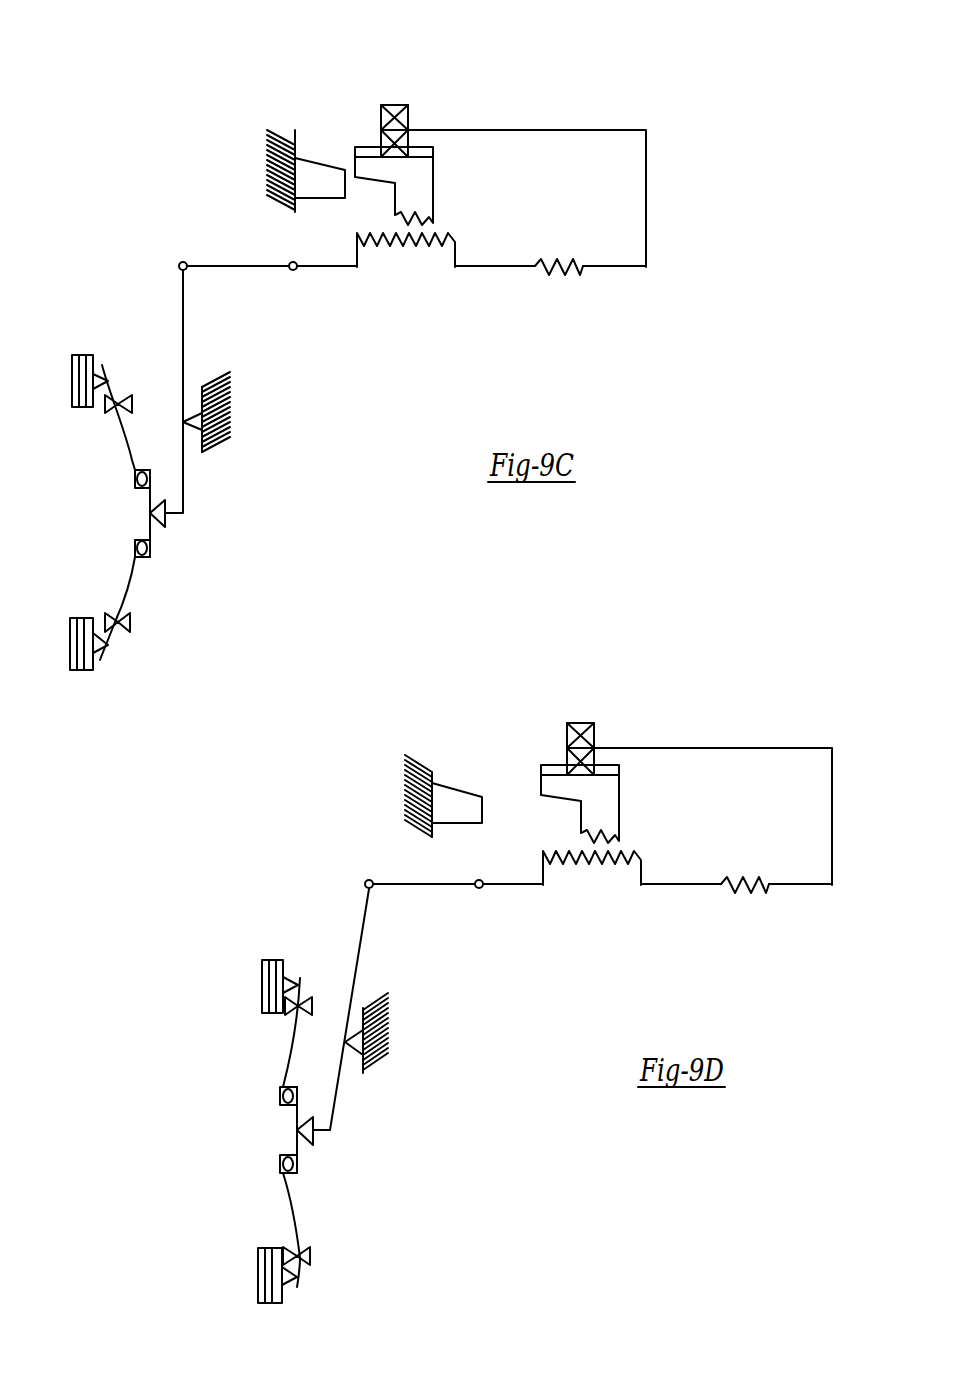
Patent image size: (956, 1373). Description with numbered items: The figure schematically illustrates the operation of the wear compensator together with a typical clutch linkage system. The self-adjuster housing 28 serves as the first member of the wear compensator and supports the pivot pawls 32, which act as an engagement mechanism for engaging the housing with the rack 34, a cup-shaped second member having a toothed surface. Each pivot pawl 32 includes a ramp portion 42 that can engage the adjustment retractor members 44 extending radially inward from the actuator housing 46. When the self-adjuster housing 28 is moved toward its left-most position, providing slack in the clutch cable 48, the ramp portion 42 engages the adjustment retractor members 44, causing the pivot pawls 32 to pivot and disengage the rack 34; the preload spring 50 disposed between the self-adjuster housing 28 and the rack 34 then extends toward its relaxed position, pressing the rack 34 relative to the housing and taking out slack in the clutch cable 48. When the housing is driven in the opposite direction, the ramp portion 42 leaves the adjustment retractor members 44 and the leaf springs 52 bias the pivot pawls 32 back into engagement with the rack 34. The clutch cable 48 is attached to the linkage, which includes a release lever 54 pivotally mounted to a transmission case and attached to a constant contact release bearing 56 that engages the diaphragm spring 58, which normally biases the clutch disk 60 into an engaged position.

In FIG. 9C, the self-adjuster housing 28 is at (598, 130).
In FIG. 9D, the self-adjuster housing 28 is at (713, 763).
In FIG. 9C, the pivot pawls 32 is at (409, 112).
In FIG. 9D, the pivot pawls 32 is at (643, 733).
In FIG. 9C, the rack 34 is at (421, 255).
In FIG. 9D, the rack 34 is at (611, 906).
In FIG. 9C, the ramp portion 42 is at (373, 185).
In FIG. 9D, the ramp portion 42 is at (580, 804).
In FIG. 9C, the adjustment retractor members 44 is at (315, 178).
In FIG. 9D, the adjustment retractor members 44 is at (455, 805).
In FIG. 9D, the actuator housing 46 is at (405, 794).
In FIG. 9C, the clutch cable 48 is at (240, 265).
In FIG. 9D, the clutch cable 48 is at (598, 918).
In FIG. 9C, the preload spring 50 is at (560, 273).
In FIG. 9D, the preload spring 50 is at (772, 934).
In FIG. 9C, the leaf springs 52 is at (395, 105).
In FIG. 9D, the leaf springs 52 is at (601, 699).
In FIG. 9C, the release lever 54 is at (183, 338).
In FIG. 9D, the release lever 54 is at (337, 1088).
In FIG. 9C, the constant contact release bearing 56 is at (150, 550).
In FIG. 9D, the constant contact release bearing 56 is at (297, 1173).
In FIG. 9C, the diaphragm spring 58 is at (130, 587).
In FIG. 9D, the diaphragm spring 58 is at (295, 1220).
In FIG. 9C, the clutch disk 60 is at (82, 673).
In FIG. 9D, the clutch disk 60 is at (268, 1303).